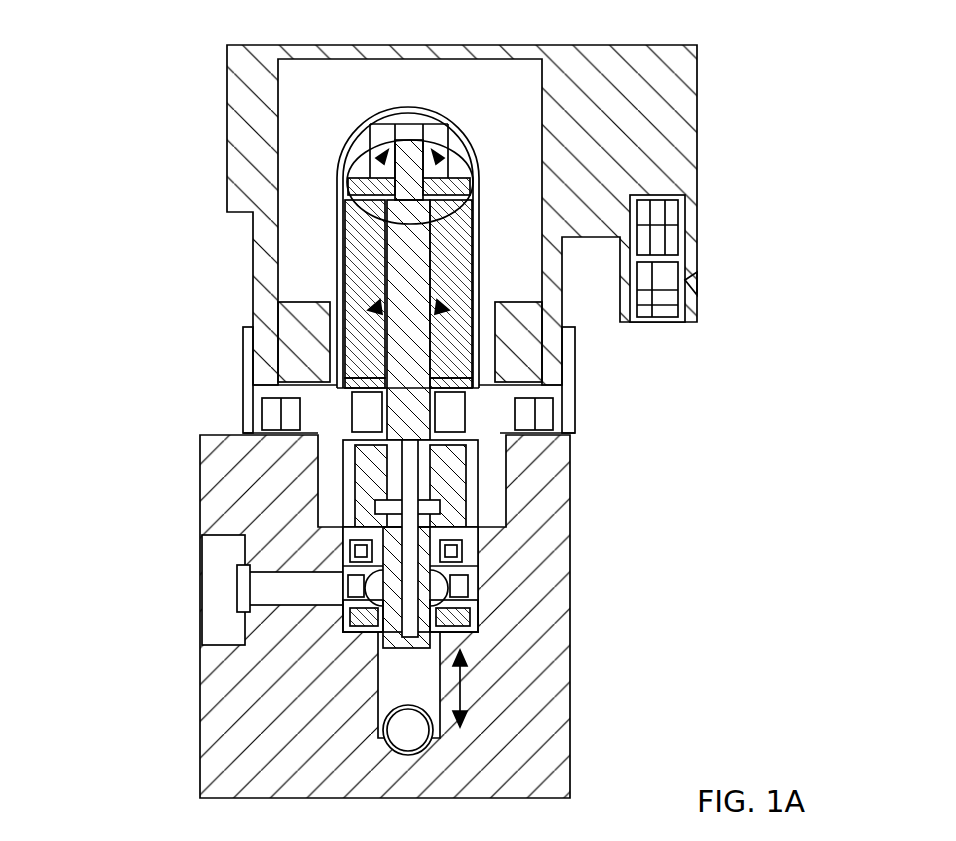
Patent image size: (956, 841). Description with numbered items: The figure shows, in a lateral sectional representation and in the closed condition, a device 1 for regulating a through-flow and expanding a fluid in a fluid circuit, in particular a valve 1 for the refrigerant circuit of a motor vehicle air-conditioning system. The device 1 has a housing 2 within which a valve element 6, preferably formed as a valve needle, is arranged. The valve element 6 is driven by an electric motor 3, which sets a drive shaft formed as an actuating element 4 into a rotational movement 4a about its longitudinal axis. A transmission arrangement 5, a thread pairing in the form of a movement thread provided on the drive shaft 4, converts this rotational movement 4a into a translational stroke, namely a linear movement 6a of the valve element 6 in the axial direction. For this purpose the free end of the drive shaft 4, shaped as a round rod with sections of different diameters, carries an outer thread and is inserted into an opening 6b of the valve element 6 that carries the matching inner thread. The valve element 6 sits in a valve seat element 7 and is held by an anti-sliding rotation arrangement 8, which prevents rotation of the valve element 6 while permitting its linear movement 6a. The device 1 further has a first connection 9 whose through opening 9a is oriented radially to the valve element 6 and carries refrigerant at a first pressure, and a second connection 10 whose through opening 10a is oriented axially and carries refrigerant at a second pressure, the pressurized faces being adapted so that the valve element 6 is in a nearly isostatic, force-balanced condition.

The device 1 is at (738, 97).
The housing 2 is at (507, 478).
The electric motor 3 is at (348, 240).
The actuating element 4 is at (328, 348).
The rotational movement 4a is at (352, 130).
The transmission arrangement 5 is at (322, 512).
The valve element 6 is at (345, 625).
The linear movement 6a is at (468, 688).
The opening 6b is at (476, 548).
The valve seat element 7 is at (460, 584).
The anti-sliding rotation arrangement 8 is at (352, 470).
The first connection 9 is at (238, 552).
The through opening of the first connection 9a is at (280, 596).
The second connection 10 is at (375, 720).
The through opening of the second connection 10a is at (403, 677).